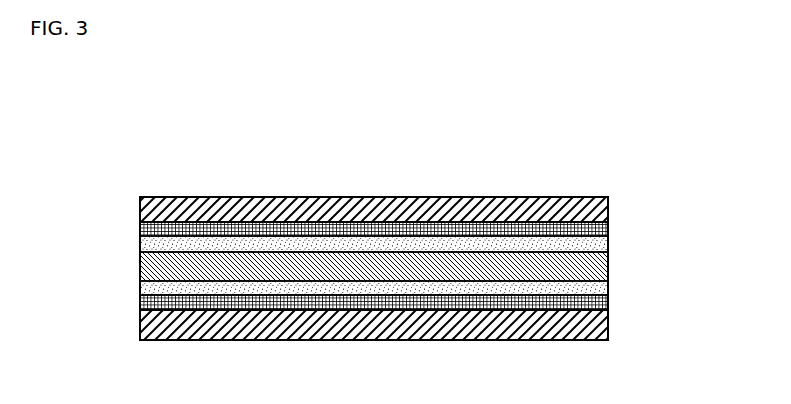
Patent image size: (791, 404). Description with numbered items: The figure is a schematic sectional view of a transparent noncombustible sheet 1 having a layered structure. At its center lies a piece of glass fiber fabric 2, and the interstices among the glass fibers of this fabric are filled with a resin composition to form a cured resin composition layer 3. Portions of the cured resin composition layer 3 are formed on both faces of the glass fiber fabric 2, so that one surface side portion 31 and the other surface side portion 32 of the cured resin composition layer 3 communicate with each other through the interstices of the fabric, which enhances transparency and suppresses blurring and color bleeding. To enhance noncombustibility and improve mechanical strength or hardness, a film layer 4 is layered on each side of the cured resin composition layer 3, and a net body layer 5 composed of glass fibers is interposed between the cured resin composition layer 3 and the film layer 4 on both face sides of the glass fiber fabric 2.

The transparent noncombustible sheet 1 is at (547, 159).
The glass fiber fabric 2 is at (608, 272).
The cured resin composition layer 3 is at (608, 247).
The film layer 4 is at (608, 200).
The net body layer 5 is at (608, 228).
The one surface side portion 31 is at (140, 210).
The other surface side portion 32 is at (140, 322).